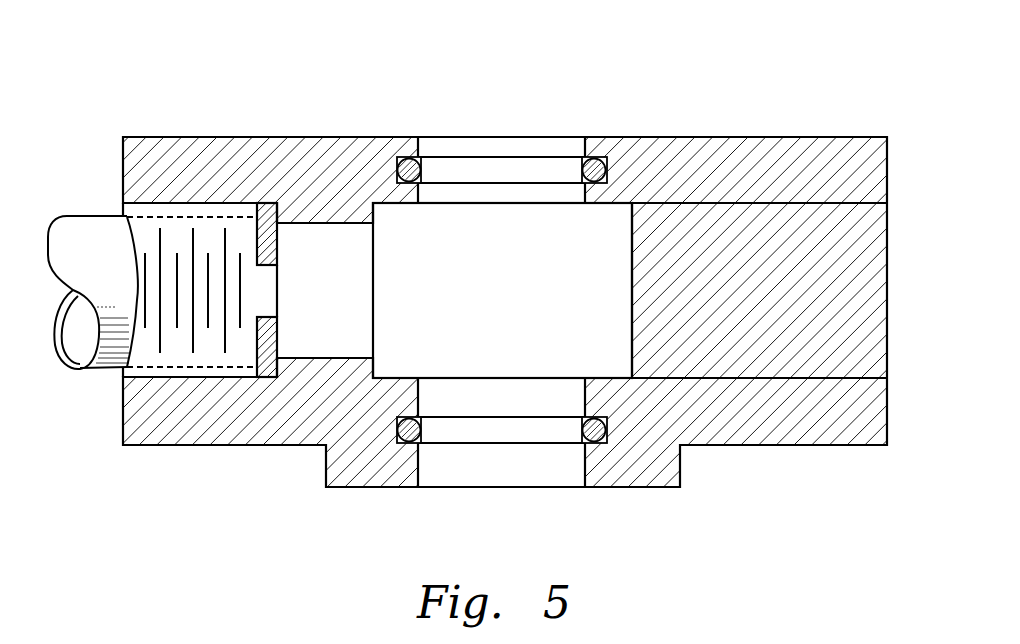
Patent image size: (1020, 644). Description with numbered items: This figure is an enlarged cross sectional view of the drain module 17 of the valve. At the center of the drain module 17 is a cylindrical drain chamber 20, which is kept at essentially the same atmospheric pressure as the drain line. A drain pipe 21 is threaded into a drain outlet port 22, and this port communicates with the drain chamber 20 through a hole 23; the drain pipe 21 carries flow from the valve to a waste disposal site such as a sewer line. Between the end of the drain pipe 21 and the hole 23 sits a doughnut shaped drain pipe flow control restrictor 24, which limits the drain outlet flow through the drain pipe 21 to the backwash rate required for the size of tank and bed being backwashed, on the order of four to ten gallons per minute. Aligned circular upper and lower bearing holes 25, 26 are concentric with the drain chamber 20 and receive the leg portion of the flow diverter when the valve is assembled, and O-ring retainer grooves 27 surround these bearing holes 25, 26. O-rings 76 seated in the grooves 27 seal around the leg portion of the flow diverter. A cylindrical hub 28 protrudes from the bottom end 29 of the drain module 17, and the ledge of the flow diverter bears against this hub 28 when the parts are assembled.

The drain module 17 is at (756, 103).
The drain chamber 20 is at (490, 297).
The drain pipe 21 is at (97, 368).
The drain outlet port 22 is at (153, 277).
The hole 23 is at (310, 297).
The drain pipe flow control restrictor 24 is at (258, 237).
The upper bearing hole 25 is at (547, 136).
The lower bearing hole 26 is at (567, 488).
The O-ring retainer grooves 27 is at (450, 170).
The cylindrical hub 28 is at (680, 486).
The bottom end 29 is at (253, 445).
The O-rings 76 is at (415, 168).